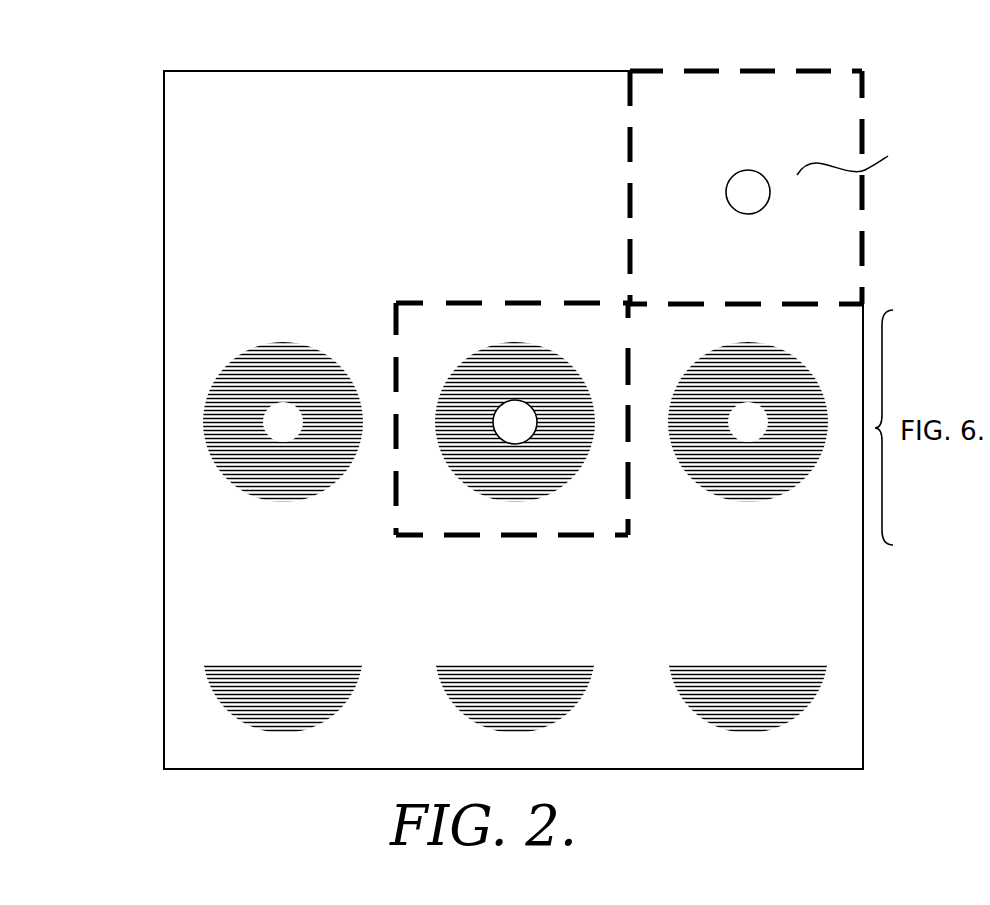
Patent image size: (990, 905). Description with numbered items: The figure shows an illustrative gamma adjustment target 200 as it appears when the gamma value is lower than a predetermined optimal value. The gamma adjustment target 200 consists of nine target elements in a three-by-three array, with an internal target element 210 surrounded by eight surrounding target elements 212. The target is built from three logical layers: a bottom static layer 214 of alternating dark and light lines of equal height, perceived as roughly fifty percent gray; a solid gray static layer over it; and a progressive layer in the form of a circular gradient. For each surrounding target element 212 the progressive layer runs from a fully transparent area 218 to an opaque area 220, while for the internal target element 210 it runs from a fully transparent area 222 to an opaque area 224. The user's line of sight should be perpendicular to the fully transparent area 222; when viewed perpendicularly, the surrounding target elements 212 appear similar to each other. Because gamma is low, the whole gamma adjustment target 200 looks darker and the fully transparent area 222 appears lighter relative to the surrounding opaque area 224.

The gamma adjustment target 200 is at (518, 397).
The internal target element 210 is at (577, 536).
The surrounding target elements 212 is at (707, 71).
The bottom static layer 214 is at (172, 134).
The fully transparent area 218 is at (733, 209).
The opaque area 220 is at (866, 159).
The fully transparent area 222 is at (499, 437).
The opaque area 224 is at (472, 402).